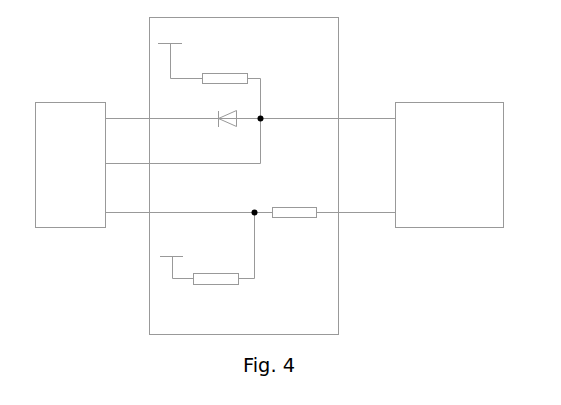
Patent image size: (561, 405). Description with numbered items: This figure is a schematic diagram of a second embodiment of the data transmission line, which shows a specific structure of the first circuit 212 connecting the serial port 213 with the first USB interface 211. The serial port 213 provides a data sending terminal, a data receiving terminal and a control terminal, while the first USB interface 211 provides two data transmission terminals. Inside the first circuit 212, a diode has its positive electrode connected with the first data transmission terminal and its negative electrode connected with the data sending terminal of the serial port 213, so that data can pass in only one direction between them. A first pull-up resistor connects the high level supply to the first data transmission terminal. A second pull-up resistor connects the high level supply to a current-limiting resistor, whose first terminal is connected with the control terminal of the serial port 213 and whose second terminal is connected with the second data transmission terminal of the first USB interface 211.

The serial port 213 is at (71, 165).
The first USB interface 211 is at (450, 165).
The first circuit 212 is at (250, 176).